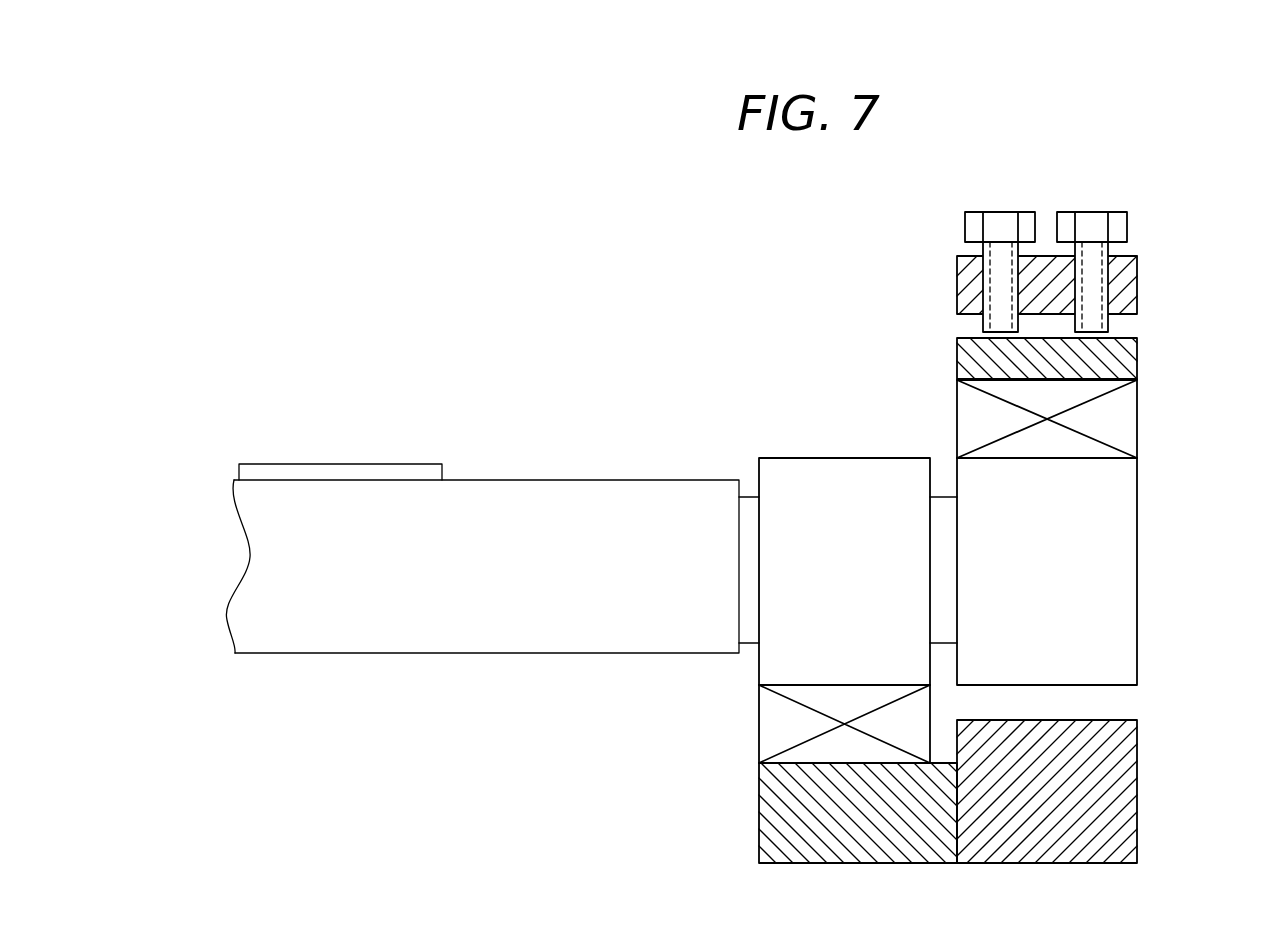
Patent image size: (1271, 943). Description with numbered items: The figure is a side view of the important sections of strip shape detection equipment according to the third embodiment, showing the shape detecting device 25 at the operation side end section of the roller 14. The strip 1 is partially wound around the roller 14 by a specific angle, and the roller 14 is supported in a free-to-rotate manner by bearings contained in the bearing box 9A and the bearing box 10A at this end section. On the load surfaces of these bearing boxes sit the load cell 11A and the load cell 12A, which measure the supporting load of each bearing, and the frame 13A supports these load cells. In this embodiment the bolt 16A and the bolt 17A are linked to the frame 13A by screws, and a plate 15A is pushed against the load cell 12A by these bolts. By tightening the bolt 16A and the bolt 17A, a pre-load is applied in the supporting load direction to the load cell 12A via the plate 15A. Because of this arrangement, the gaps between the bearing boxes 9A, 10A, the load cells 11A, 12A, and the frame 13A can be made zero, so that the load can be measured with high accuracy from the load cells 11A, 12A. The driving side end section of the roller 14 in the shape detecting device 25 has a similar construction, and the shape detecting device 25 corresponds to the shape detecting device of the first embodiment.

The shape detecting device 25 is at (523, 361).
The strip 1 is at (353, 464).
The roller 14 is at (396, 653).
The bearing box 9A is at (840, 458).
The load cell 11A is at (759, 733).
The bearing box 10A is at (1137, 570).
The load cell 12A is at (1137, 421).
The plate 15A is at (1137, 358).
The frame 13A is at (1137, 284).
The bolt 17A is at (993, 212).
The bolt 16A is at (1090, 212).